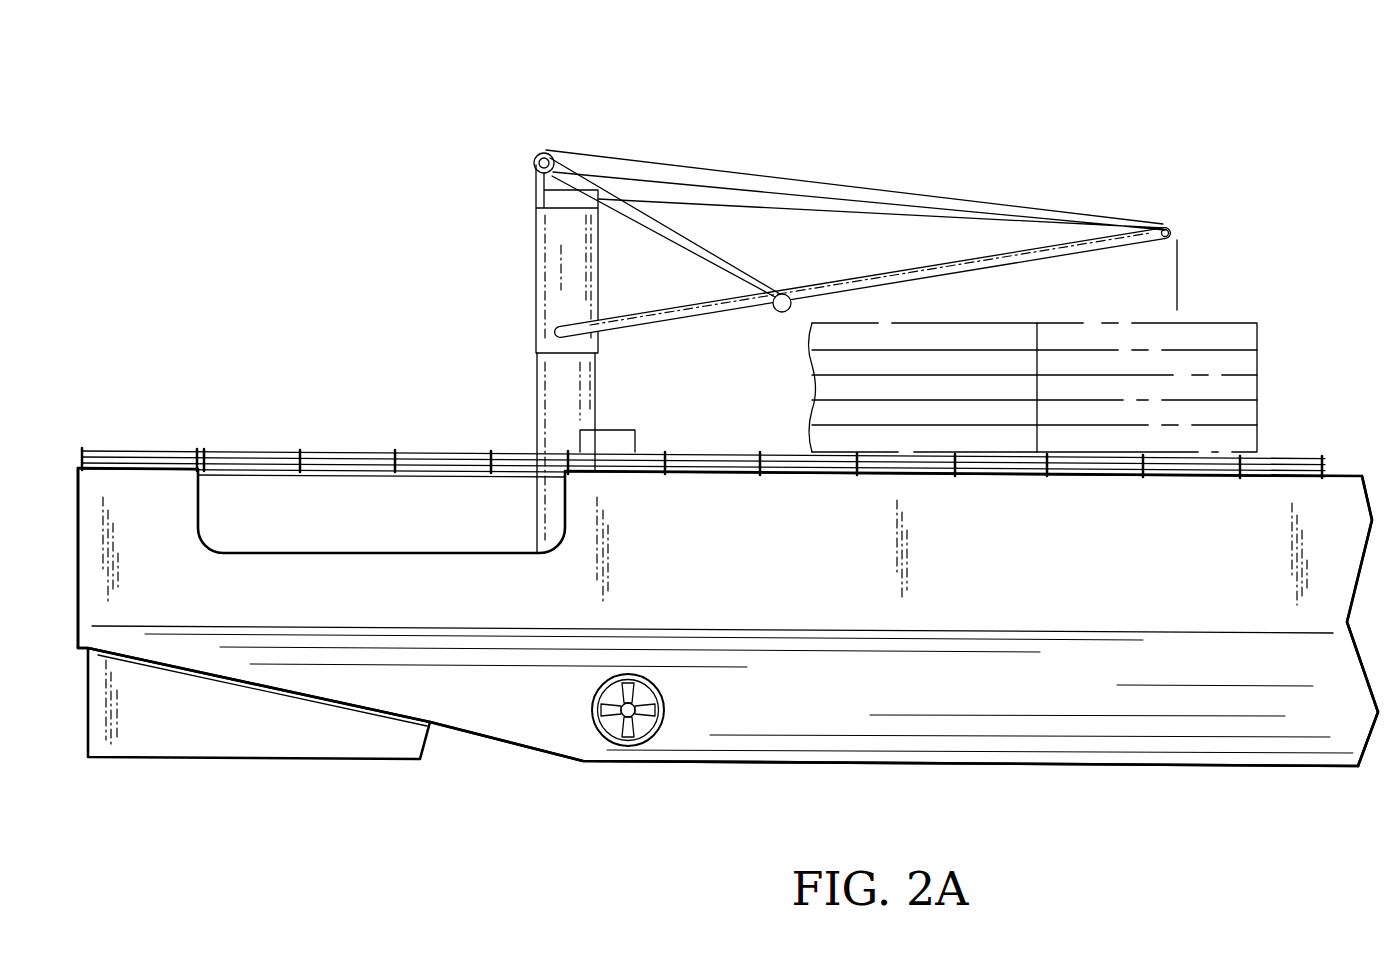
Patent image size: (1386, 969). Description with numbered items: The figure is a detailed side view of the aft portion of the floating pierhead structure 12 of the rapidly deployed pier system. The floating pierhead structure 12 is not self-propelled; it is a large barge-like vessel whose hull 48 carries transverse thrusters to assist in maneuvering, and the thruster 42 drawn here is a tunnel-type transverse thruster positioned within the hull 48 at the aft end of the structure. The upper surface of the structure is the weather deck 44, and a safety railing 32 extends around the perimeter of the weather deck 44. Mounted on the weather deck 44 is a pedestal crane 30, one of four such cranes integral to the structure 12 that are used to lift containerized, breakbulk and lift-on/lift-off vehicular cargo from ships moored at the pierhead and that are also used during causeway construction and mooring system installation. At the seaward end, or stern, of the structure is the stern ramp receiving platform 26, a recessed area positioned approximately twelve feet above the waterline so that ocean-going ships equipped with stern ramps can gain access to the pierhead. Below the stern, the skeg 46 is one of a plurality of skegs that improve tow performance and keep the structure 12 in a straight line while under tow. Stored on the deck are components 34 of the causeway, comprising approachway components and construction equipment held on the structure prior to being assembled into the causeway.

The floating pierhead structure 12 is at (345, 212).
The stern ramp receiving platform 26 is at (358, 510).
The pedestal crane 30 is at (538, 292).
The safety railing 32 is at (115, 457).
The components of causeway 34 is at (1237, 322).
The thruster 42 is at (653, 707).
The weather deck 44 is at (1352, 472).
The skeg 46 is at (175, 748).
The hull 48 is at (797, 740).